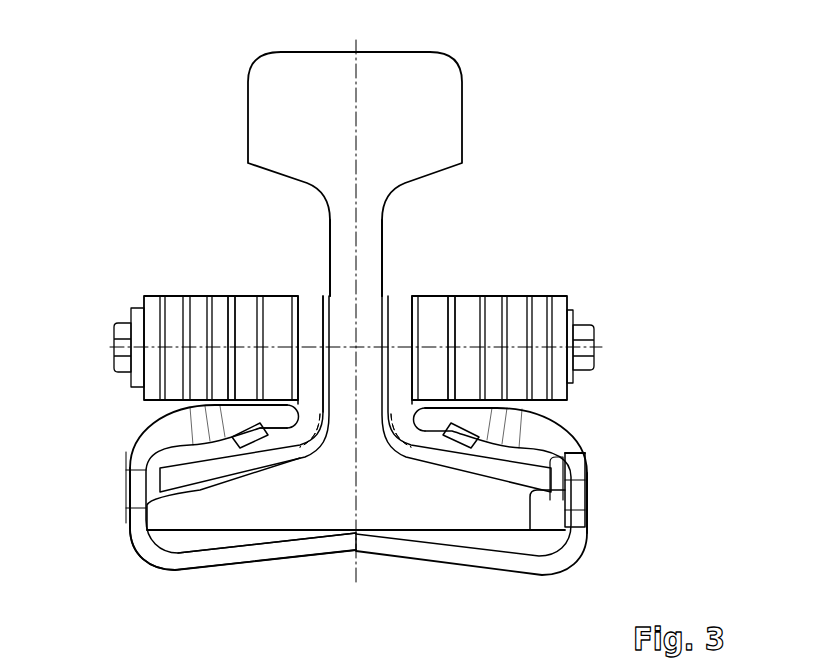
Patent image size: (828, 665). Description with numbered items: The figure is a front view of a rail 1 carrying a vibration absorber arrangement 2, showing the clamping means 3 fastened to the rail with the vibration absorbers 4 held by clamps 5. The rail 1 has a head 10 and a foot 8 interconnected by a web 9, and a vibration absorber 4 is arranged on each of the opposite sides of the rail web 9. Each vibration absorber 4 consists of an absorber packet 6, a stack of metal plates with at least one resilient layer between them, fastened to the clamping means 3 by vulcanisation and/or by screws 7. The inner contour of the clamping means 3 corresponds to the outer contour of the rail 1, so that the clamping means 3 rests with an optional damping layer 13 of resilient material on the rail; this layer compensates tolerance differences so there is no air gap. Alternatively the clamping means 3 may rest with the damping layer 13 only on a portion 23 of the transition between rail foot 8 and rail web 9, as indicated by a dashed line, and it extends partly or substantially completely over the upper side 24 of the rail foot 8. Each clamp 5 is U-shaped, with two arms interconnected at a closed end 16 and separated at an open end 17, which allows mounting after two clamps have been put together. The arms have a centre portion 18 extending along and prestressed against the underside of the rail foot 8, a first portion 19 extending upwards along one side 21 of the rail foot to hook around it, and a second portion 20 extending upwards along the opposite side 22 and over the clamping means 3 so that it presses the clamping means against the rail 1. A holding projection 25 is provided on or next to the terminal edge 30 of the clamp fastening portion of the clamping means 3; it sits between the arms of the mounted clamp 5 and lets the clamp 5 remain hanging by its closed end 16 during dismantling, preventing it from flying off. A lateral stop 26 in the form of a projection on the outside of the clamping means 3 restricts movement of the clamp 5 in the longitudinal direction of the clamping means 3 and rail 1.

The rail 1 is at (474, 100).
The head 10 is at (437, 68).
The web 9 is at (365, 228).
The vibration absorber arrangement 2 is at (116, 382).
The clamping means 3 is at (310, 304).
The damping layer 13 is at (330, 300).
The vibration absorber 4 is at (203, 283).
The absorber packet 6 is at (244, 303).
The screw 7 is at (125, 326).
The clamp 5 is at (575, 412).
The foot 8 is at (442, 520).
The closed end 16 is at (248, 412).
The open end 17 is at (598, 466).
The centre portion 18 is at (278, 553).
The first portion 19 is at (577, 489).
The second portion 20 is at (137, 487).
The side of the rail foot 21 is at (587, 511).
The opposite side of the rail foot 22 is at (137, 513).
The portion of the transition between rail foot and rail web 23 is at (322, 458).
The upper side of the rail foot 24 is at (240, 483).
The holding projection 25 is at (580, 456).
The lateral stop 26 is at (250, 437).
The terminal edge 30 is at (528, 480).